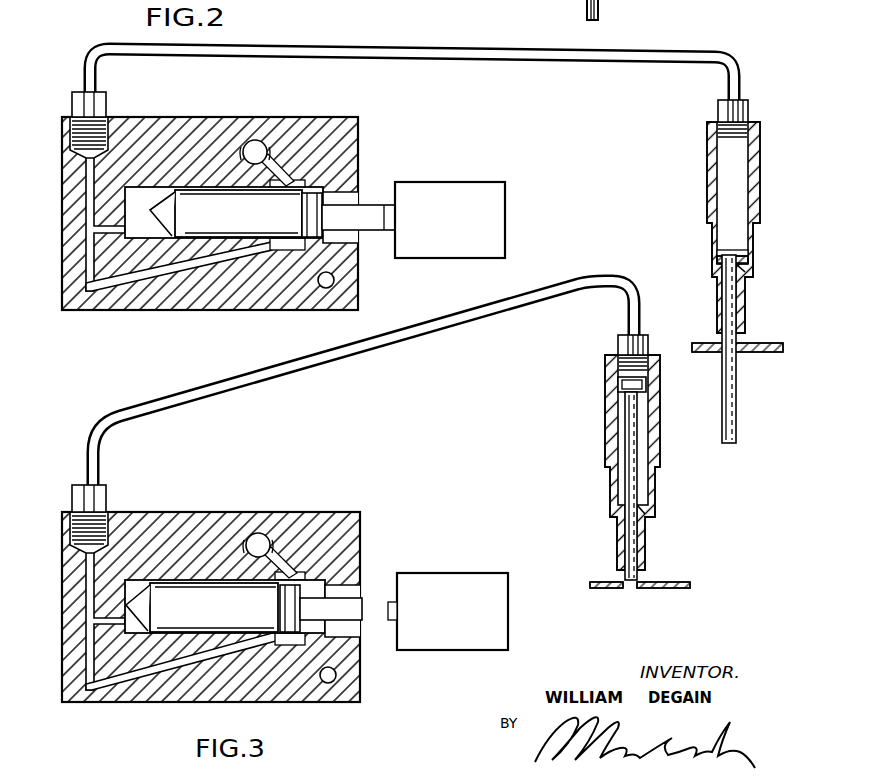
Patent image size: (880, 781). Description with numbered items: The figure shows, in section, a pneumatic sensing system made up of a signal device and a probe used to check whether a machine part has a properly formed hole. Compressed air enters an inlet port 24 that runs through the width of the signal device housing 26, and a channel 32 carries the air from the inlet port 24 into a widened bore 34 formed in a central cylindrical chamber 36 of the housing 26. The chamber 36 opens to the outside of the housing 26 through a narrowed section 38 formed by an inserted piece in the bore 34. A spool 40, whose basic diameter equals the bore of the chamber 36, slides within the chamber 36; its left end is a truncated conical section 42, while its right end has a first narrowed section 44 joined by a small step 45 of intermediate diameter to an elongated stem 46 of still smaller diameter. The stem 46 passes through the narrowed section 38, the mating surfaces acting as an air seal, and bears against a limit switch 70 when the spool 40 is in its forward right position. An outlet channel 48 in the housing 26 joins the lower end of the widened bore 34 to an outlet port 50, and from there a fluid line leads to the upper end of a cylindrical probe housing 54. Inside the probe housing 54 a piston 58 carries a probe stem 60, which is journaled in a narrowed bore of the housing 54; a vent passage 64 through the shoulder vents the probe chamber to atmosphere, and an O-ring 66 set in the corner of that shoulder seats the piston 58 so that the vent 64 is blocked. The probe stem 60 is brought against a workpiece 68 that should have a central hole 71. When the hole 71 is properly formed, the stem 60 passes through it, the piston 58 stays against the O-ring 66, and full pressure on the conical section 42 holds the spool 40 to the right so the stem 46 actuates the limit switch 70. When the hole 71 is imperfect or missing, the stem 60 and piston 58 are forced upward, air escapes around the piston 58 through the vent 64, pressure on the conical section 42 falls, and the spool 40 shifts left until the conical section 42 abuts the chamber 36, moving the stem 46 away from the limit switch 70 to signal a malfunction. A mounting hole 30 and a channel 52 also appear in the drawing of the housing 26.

In FIG. 2, the inlet port 24 is at (260, 140).
In FIG. 3, the inlet port 24 is at (264, 533).
In FIG. 2, the signal device housing 26 is at (246, 309).
In FIG. 3, the signal device housing 26 is at (212, 526).
In FIG. 2, the mounting hole 30 is at (334, 280).
In FIG. 3, the mounting hole 30 is at (336, 675).
In FIG. 2, the channel 32 is at (282, 162).
In FIG. 3, the channel 32 is at (280, 561).
In FIG. 2, the widened bore 34 is at (292, 250).
In FIG. 2, the central cylindrical chamber 36 is at (186, 187).
In FIG. 3, the central cylindrical chamber 36 is at (186, 580).
In FIG. 2, the narrowed section 38 is at (340, 243).
In FIG. 3, the narrowed section 38 is at (346, 586).
In FIG. 2, the spool 40 is at (256, 217).
In FIG. 3, the spool 40 is at (241, 614).
In FIG. 2, the truncated conical section 42 is at (160, 206).
In FIG. 3, the truncated conical section 42 is at (138, 606).
In FIG. 3, the first narrowed section 44 is at (290, 640).
In FIG. 2, the step 45 is at (318, 195).
In FIG. 3, the step 45 is at (310, 586).
In FIG. 2, the elongated stem 46 is at (372, 210).
In FIG. 3, the elongated stem 46 is at (350, 603).
In FIG. 2, the outlet channel 48 is at (145, 286).
In FIG. 3, the outlet channel 48 is at (90, 666).
In FIG. 2, the outlet port 50 is at (110, 118).
In FIG. 3, the outlet port 50 is at (110, 518).
In FIG. 2, the supply passage 52 is at (96, 232).
In FIG. 3, the supply passage 52 is at (100, 626).
In FIG. 2, the probe housing 54 is at (760, 202).
In FIG. 3, the probe housing 54 is at (660, 421).
In FIG. 2, the piston 58 is at (717, 259).
In FIG. 3, the piston 58 is at (620, 388).
In FIG. 2, the probe stem 60 is at (736, 414).
In FIG. 3, the probe stem 60 is at (640, 576).
In FIG. 2, the vent passage 64 is at (745, 268).
In FIG. 3, the vent passage 64 is at (646, 511).
In FIG. 2, the O-ring 66 is at (748, 256).
In FIG. 3, the workpiece 68 is at (606, 589).
In FIG. 2, the limit switch 70 is at (446, 258).
In FIG. 3, the limit switch 70 is at (456, 650).
In FIG. 2, the central hole 71 is at (722, 350).
In FIG. 3, the central hole 71 is at (644, 589).